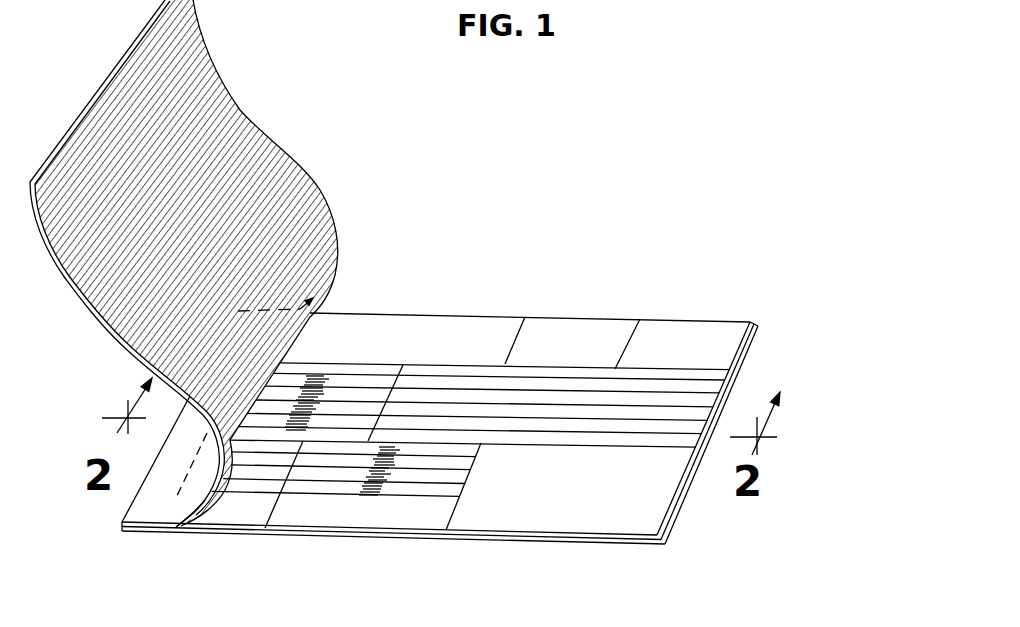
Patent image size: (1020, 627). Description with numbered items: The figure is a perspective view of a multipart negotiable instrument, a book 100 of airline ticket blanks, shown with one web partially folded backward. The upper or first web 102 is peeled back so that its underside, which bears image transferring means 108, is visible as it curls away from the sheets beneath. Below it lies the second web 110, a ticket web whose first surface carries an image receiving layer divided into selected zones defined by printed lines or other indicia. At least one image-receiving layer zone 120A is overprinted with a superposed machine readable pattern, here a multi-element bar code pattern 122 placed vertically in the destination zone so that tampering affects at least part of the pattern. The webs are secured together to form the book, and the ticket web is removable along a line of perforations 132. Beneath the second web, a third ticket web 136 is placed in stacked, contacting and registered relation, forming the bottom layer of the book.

The book 100 is at (678, 253).
The first web 102 is at (344, 223).
The image transferring means 108 is at (316, 178).
The second web 110 is at (702, 314).
The image-receiving layer zone 120A is at (421, 487).
The bar code pattern 122 is at (361, 481).
The line of perforations 132 is at (171, 532).
The third ticket web 136 is at (633, 546).